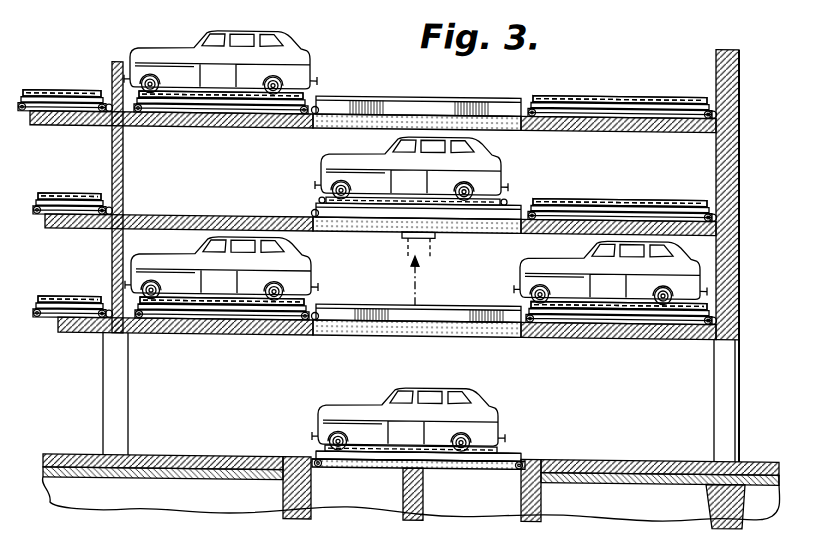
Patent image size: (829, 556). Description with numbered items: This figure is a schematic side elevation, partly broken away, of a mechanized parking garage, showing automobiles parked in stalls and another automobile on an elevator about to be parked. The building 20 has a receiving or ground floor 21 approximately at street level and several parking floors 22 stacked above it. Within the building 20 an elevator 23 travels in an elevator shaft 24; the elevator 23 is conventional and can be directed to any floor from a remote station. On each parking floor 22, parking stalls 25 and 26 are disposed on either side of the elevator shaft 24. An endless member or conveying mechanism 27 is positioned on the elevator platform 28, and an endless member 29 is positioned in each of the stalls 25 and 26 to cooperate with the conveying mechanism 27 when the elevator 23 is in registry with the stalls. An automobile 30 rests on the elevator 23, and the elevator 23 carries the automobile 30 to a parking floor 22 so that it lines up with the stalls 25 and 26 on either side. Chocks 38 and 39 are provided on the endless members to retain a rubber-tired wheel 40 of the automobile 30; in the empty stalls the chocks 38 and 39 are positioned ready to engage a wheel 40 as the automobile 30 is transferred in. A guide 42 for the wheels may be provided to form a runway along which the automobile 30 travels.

The building 20 is at (748, 184).
The receiving or ground floor 21 is at (612, 460).
The parking floors 22 is at (220, 121).
The elevator 23 is at (486, 237).
The elevator shaft 24 is at (526, 126).
The parking stall 25 is at (333, 75).
The parking stall 26 is at (90, 84).
The endless member or conveying mechanism 27 is at (513, 456).
The elevator platform 28 is at (372, 469).
The endless member 29 is at (320, 102).
The automobile 30 is at (283, 50).
The chock 38 is at (138, 113).
The chock 39 is at (158, 106).
The rubber-tired wheel 40 is at (157, 78).
The guide 42 is at (48, 93).